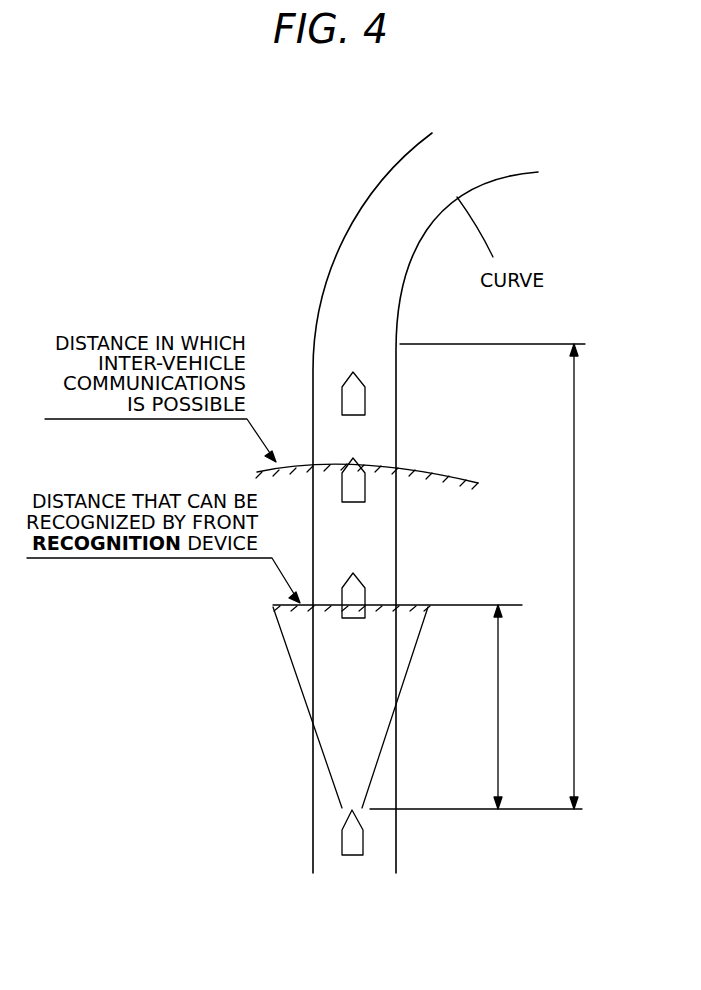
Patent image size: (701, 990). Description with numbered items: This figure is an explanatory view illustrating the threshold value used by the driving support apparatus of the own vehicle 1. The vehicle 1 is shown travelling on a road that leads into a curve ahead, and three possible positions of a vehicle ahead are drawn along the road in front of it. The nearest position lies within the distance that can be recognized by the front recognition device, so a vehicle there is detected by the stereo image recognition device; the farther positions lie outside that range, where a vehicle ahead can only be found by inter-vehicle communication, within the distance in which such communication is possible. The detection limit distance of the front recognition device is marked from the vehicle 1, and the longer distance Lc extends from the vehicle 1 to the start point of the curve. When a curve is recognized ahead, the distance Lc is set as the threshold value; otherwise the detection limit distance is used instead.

The vehicle 1 is at (353, 845).
The distance to curve start point Lc is at (585, 576).